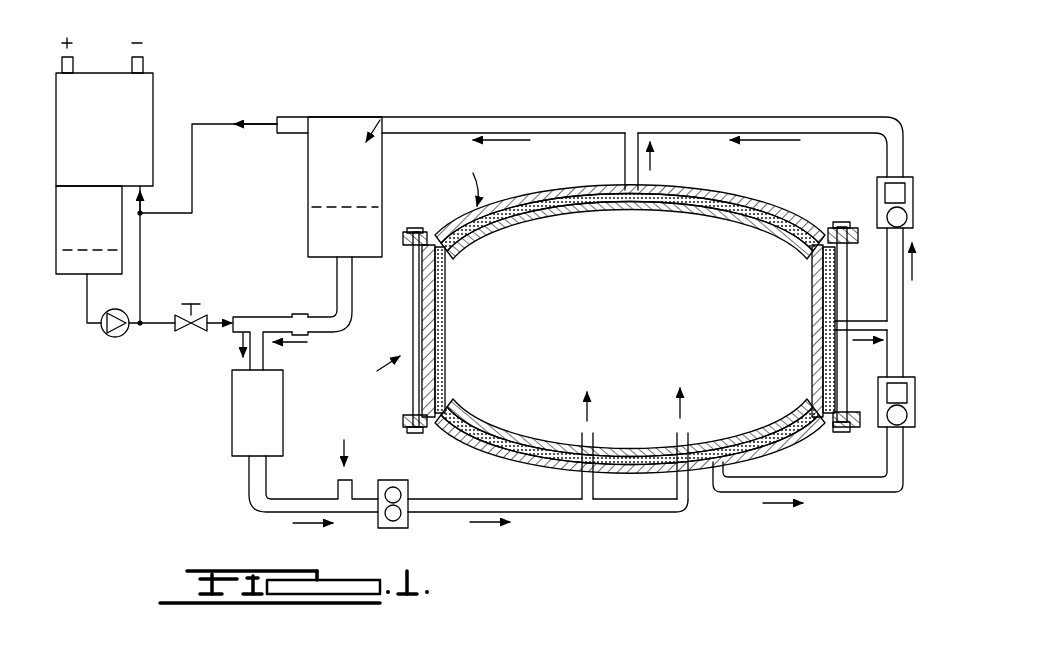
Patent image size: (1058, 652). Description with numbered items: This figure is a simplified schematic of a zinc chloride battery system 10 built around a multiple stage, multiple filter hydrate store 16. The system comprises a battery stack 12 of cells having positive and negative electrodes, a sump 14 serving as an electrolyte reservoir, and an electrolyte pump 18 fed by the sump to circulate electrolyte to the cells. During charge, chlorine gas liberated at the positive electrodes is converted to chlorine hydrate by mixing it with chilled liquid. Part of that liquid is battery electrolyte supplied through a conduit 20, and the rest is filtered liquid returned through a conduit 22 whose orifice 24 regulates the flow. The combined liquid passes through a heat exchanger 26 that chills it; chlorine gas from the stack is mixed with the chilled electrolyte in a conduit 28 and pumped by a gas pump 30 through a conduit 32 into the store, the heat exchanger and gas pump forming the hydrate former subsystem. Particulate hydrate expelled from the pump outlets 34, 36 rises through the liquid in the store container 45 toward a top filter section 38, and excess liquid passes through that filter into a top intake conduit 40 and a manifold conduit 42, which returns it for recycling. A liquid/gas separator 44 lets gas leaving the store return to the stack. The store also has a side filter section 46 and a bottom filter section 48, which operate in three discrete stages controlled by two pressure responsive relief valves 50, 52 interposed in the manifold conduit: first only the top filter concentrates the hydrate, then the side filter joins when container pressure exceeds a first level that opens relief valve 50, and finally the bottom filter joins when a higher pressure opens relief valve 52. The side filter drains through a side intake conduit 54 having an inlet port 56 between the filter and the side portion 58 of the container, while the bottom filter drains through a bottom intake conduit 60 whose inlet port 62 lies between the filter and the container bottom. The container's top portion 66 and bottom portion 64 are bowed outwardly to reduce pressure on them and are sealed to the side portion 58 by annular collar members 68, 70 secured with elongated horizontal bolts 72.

The zinc chloride battery system 10 is at (491, 74).
The battery stack 12 is at (135, 92).
The sump 14 is at (90, 240).
The hydrate store 16 is at (369, 368).
The electrolyte pump 18 is at (117, 337).
The conduit 20 is at (237, 313).
The conduit 22 is at (352, 294).
The orifice 24 is at (298, 320).
The heat exchanger 26 is at (235, 410).
The conduit 28 is at (255, 508).
The gas pump 30 is at (398, 528).
The conduit 32 is at (557, 507).
The pump outlet 34 is at (593, 433).
The pump outlet 36 is at (687, 433).
The top filter section 38 is at (630, 208).
The top intake conduit 40 is at (625, 148).
The manifold conduit 42 is at (540, 118).
The liquid/gas separator 44 is at (325, 152).
The store container 45 is at (460, 180).
The side filter section 46 is at (445, 307).
The bottom filter section 48 is at (630, 440).
The relief valve 50 is at (943, 158).
The relief valve 52 is at (915, 412).
The side intake conduit 54 is at (858, 322).
The electrode 56 is at (818, 327).
The side portion 58 is at (828, 302).
The bottom intake conduit 60 is at (855, 487).
The inlet port 62 is at (722, 447).
The bottom portion 64 is at (476, 458).
The top portion 66 is at (507, 207).
The annular collar member 68 is at (398, 233).
The annular collar member 70 is at (405, 433).
The bolts 72 is at (412, 388).